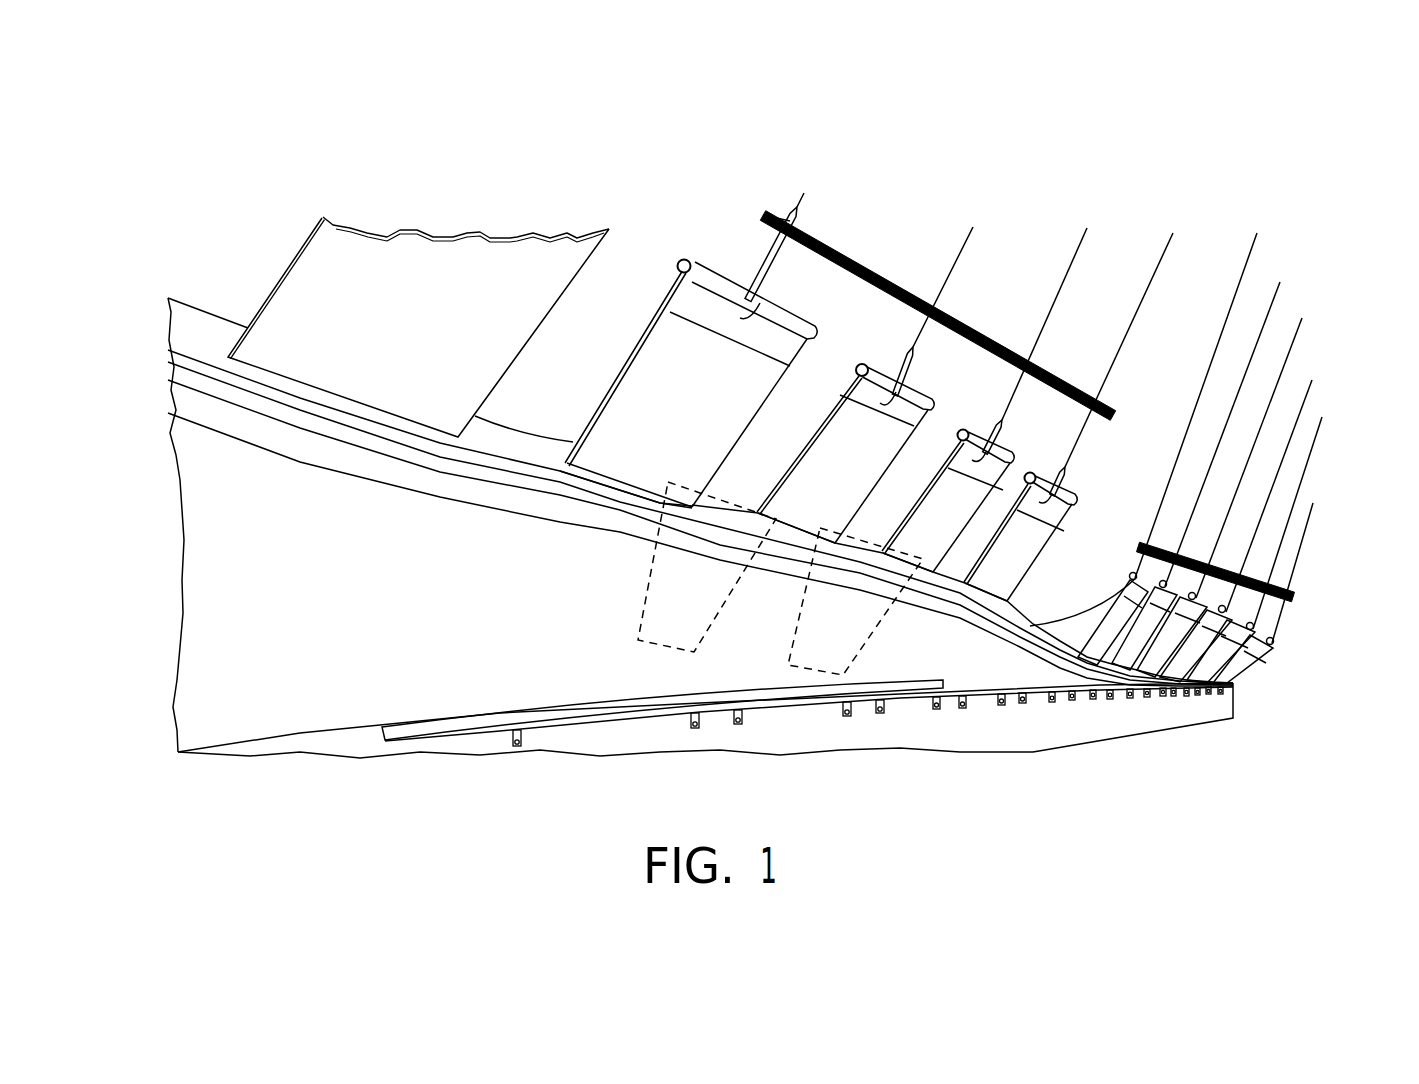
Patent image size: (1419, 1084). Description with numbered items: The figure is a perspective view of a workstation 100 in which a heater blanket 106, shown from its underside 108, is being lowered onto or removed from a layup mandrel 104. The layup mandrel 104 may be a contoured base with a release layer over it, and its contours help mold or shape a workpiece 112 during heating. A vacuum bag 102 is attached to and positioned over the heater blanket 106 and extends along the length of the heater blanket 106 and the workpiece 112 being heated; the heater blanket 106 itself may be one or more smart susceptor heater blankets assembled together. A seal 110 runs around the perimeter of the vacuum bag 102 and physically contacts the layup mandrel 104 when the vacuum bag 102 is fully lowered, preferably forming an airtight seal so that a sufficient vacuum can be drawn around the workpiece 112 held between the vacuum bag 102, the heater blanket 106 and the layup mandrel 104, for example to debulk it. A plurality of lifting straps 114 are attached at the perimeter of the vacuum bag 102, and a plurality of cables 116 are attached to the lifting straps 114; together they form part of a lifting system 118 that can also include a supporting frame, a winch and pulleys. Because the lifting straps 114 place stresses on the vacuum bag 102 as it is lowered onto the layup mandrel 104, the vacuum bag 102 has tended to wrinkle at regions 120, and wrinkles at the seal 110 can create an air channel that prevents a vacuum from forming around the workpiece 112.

The workstation 100 is at (372, 143).
The vacuum bag 102 is at (193, 327).
The layup mandrel 104 is at (1060, 728).
The heater blanket 106 is at (217, 542).
The underside 108 is at (520, 680).
The seal 110 is at (178, 360).
The workpiece 112 is at (438, 727).
The lifting straps 114 is at (518, 257).
The cables 116 is at (958, 257).
The lifting system 118 is at (1318, 272).
The regions 120 is at (718, 625).